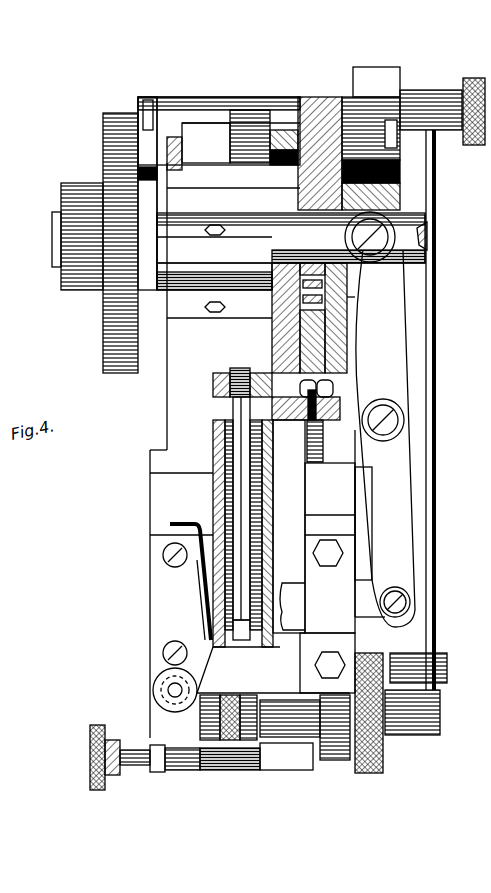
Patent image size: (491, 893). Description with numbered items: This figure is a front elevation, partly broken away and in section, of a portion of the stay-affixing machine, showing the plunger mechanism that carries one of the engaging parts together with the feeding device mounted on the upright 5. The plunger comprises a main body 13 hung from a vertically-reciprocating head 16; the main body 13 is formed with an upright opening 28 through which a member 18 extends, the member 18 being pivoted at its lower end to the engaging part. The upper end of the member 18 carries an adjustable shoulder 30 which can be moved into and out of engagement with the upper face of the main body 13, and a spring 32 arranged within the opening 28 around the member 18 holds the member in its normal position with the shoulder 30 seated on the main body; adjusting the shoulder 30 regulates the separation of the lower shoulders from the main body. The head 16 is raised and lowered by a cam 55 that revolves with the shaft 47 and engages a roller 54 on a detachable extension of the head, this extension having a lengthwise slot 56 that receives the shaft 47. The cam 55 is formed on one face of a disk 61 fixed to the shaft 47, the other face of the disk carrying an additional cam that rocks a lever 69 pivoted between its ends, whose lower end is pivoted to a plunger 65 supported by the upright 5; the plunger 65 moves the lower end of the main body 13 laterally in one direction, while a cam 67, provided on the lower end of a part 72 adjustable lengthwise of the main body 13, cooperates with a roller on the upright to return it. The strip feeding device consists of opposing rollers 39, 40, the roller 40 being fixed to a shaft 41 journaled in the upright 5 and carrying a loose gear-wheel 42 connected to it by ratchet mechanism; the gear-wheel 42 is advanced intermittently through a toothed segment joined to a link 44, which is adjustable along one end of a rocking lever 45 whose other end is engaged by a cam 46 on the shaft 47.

The upright 5 is at (190, 462).
The main body 13 is at (213, 437).
The vertically-reciprocating head 16 is at (340, 517).
The member 18 is at (247, 547).
The upright opening 28 is at (213, 488).
The adjustable shoulder 30 is at (217, 412).
The spring 32 is at (213, 512).
The roller 39 is at (219, 766).
The roller 40 is at (200, 727).
The shaft 41 is at (291, 718).
The gear-wheel 42 is at (336, 737).
The link 44 is at (437, 358).
The rocking lever 45 is at (370, 88).
The cam 46 is at (113, 235).
The shaft 47 is at (433, 229).
The roller 54 is at (296, 310).
The cam 55 is at (317, 167).
The lengthwise slot 56 is at (402, 198).
The disk 61 is at (400, 165).
The plunger 65 is at (383, 627).
The cam 67 is at (210, 637).
The lever 69 is at (382, 488).
The adjustable part 72 is at (200, 600).